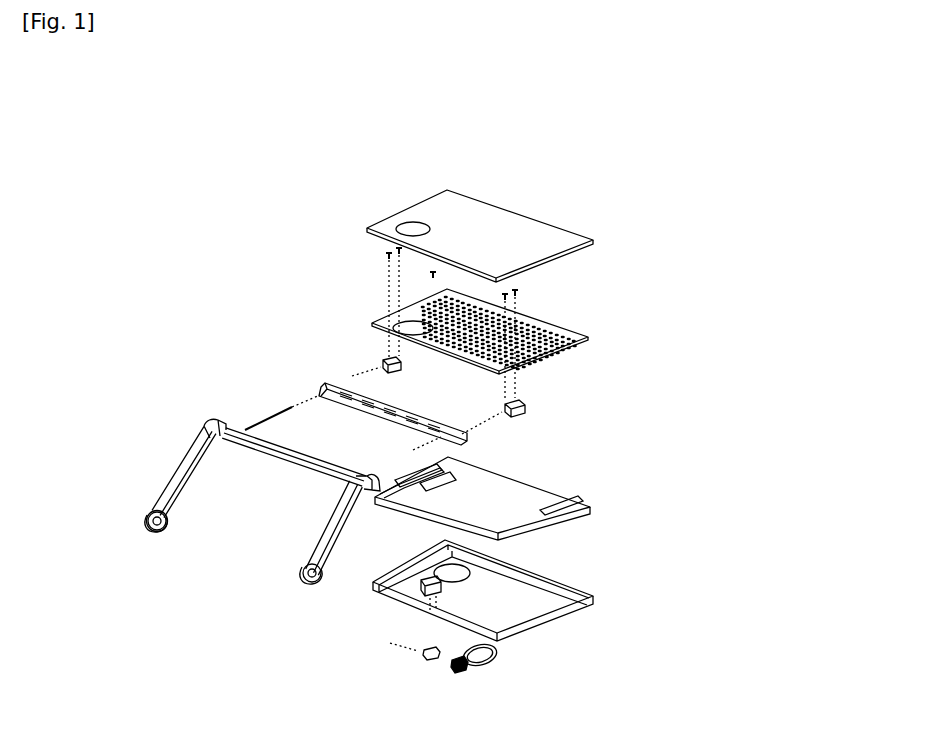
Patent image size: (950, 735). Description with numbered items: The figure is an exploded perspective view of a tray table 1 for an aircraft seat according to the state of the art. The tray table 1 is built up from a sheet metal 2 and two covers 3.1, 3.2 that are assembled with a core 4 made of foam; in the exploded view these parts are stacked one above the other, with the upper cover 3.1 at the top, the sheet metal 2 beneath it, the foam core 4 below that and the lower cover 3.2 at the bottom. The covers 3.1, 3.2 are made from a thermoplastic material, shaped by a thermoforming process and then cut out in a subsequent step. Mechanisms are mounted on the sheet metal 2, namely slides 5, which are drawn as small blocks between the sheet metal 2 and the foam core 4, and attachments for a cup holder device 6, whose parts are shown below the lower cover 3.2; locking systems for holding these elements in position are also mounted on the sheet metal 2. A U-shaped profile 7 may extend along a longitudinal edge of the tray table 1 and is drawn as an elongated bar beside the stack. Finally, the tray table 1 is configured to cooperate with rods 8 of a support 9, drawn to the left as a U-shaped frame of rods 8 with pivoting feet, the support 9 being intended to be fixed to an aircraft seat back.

The tray table 1 is at (662, 192).
The sheet metal 2 is at (553, 327).
The cover 3.1 is at (488, 230).
The cover 3.2 is at (532, 588).
The core 4 is at (497, 494).
The slides 5 is at (383, 364).
The cup holder device 6 is at (500, 668).
The U-shaped profile 7 is at (345, 395).
The rods 8 is at (270, 428).
The support 9 is at (173, 467).